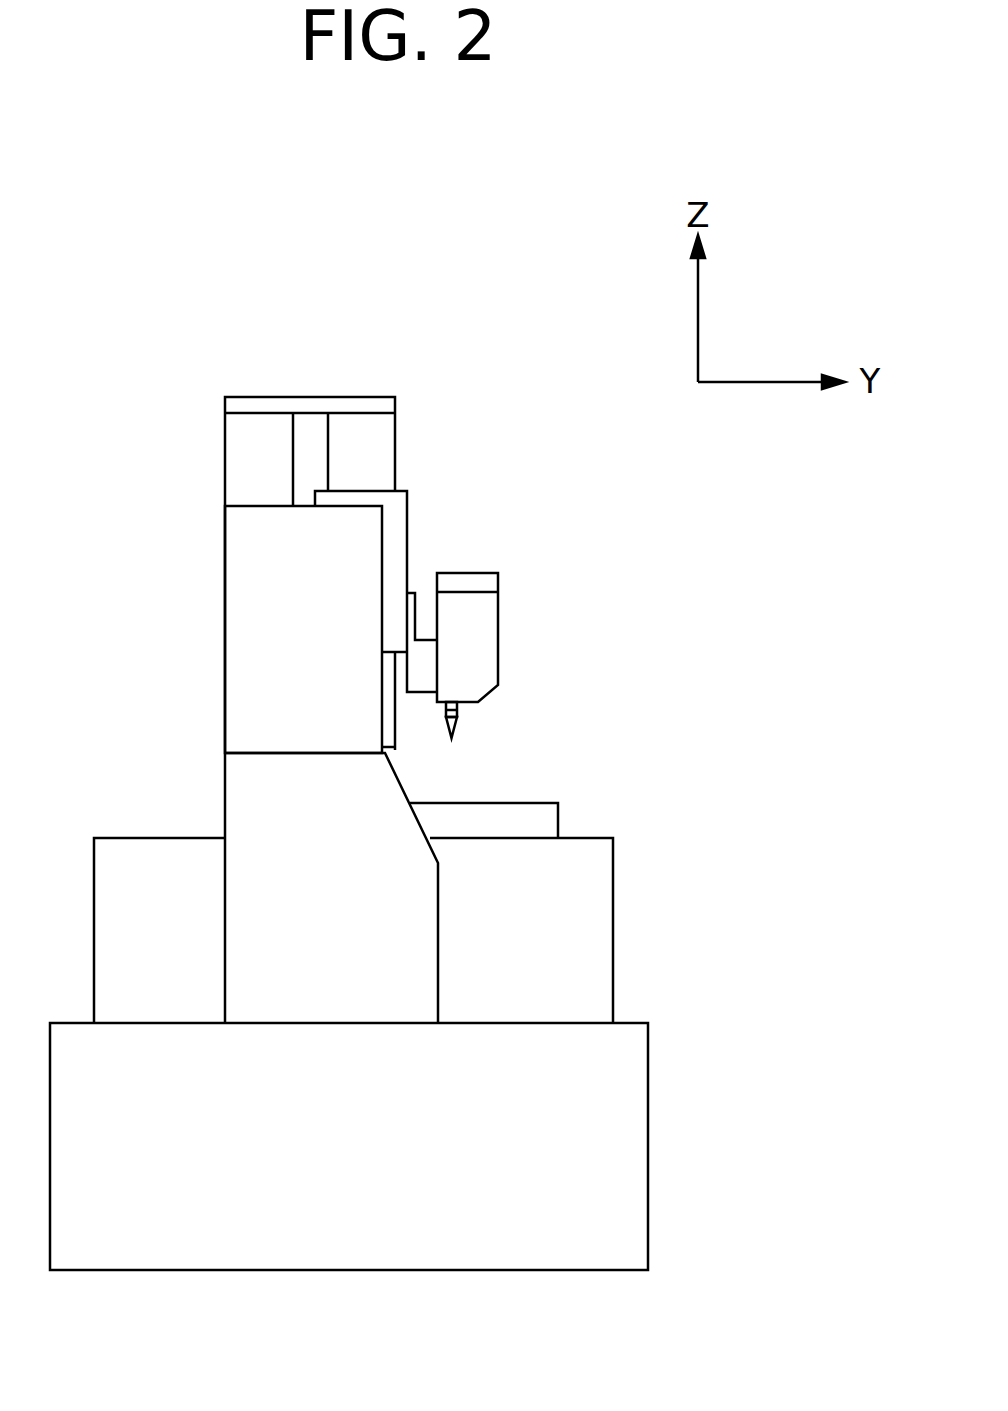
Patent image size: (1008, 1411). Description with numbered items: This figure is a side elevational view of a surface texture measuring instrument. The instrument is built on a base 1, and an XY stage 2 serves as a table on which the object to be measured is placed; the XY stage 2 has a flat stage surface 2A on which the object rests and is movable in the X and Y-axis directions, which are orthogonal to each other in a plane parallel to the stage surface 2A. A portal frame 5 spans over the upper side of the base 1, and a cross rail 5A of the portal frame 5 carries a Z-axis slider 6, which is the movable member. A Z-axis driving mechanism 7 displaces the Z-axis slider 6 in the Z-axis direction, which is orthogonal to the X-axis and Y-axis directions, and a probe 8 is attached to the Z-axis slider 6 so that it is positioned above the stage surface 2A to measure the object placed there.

The base 1 is at (512, 1270).
The XY stage 2 is at (558, 817).
The stage surface 2A is at (520, 800).
The portal frame 5 is at (225, 798).
The cross rail 5A is at (247, 608).
The Z-axis slider 6 is at (408, 518).
The Z-axis driving mechanism 7 is at (397, 427).
The probe 8 is at (498, 642).